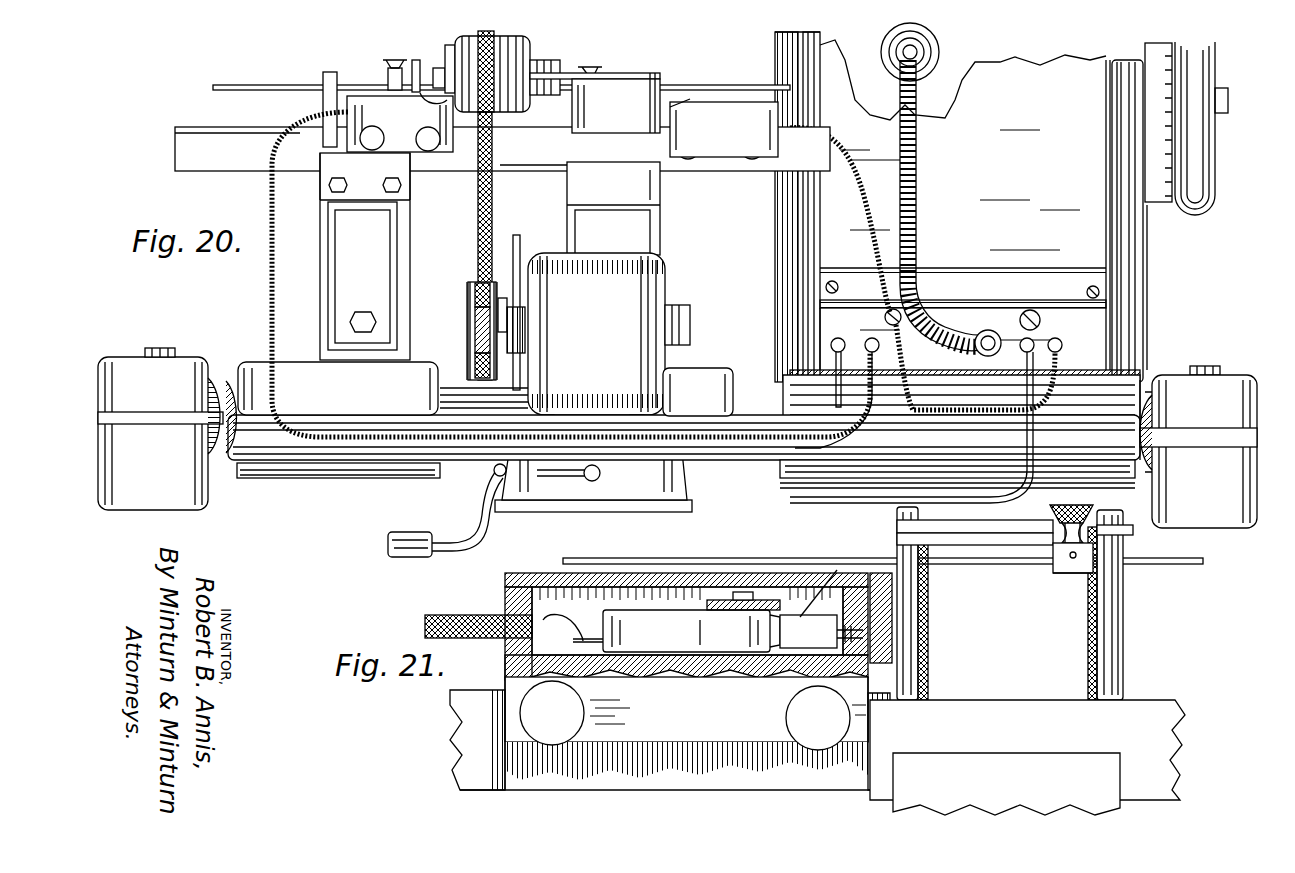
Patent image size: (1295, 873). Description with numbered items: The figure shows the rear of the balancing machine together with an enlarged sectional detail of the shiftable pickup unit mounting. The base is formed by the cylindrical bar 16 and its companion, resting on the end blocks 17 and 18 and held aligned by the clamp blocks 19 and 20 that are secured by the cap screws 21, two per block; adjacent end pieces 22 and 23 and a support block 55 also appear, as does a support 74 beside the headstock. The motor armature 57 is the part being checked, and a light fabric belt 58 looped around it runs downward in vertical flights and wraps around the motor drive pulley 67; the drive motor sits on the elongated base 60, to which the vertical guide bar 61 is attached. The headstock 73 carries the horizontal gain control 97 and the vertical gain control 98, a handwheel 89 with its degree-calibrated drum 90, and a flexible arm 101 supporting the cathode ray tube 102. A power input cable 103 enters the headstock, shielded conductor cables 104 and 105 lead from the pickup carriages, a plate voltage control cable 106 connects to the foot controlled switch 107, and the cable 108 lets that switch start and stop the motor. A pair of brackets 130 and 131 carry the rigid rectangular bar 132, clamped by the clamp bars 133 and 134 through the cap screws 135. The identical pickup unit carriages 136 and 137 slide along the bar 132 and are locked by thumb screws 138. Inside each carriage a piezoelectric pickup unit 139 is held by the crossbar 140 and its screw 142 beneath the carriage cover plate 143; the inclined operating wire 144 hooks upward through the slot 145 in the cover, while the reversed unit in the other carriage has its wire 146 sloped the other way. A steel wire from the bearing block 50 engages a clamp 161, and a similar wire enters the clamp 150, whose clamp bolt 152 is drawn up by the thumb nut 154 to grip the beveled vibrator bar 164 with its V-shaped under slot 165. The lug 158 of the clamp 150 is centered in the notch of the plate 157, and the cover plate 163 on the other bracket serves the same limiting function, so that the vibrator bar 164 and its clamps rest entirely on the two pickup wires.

In FIG. 20, the bar 16 is at (745, 395).
In FIG. 20, the end block 17 is at (198, 504).
In FIG. 20, the end block 18 is at (1218, 513).
In FIG. 20, the clamp block 19 is at (126, 374).
In FIG. 20, the clamp block 20 is at (1230, 391).
In FIG. 20, the cap screw 21 is at (160, 347).
In FIG. 20, the end block 22 is at (252, 377).
In FIG. 20, the lower block 23 is at (288, 466).
In FIG. 20, the bearing block 50 is at (668, 306).
In FIG. 20, the support block 55 is at (702, 377).
In FIG. 20, the motor armature 57 is at (506, 54).
In FIG. 20, the belt 58 is at (492, 196).
In FIG. 20, the base 60 is at (593, 472).
In FIG. 20, the guide bar 61 is at (520, 245).
In FIG. 20, the motor drive pulley 67 is at (465, 331).
In FIG. 20, the headstock 73 is at (1130, 257).
In FIG. 20, the panel support 74 is at (1140, 381).
In FIG. 20, the handwheel 89 is at (1200, 208).
In FIG. 20, the drum 90 is at (1165, 200).
In FIG. 20, the horizontal gain control 97 is at (897, 326).
In FIG. 20, the vertical gain control 98 is at (1042, 322).
In FIG. 20, the flexible arm 101 is at (918, 165).
In FIG. 20, the cathode ray tube 102 is at (940, 49).
In FIG. 20, the power input cable 103 is at (836, 405).
In FIG. 20, the shielded conductor cable 104 is at (270, 291).
In FIG. 21, the shielded conductor cable 104 is at (462, 615).
In FIG. 20, the shielded conductor cable 105 is at (873, 267).
In FIG. 20, the cathode ray plate voltage control cable 106 is at (1024, 437).
In FIG. 20, the foot controlled switch 107 is at (388, 547).
In FIG. 20, the cable 108 is at (456, 519).
In FIG. 20, the bracket 130 is at (392, 245).
In FIG. 21, the bracket 130 is at (1090, 627).
In FIG. 20, the bracket 131 is at (638, 242).
In FIG. 20, the bar 132 is at (210, 139).
In FIG. 21, the bar 132 is at (1148, 707).
In FIG. 20, the clamp bar 133 is at (408, 169).
In FIG. 21, the clamp bar 133 is at (1008, 761).
In FIG. 20, the clamp bar 134 is at (650, 189).
In FIG. 20, the cap screw 135 is at (634, 189).
In FIG. 20, the pickup unit carriage 136 is at (450, 149).
In FIG. 21, the pickup unit carriage 136 is at (670, 733).
In FIG. 20, the pickup unit carriage 137 is at (745, 111).
In FIG. 20, the thumb screw 138 is at (412, 137).
In FIG. 21, the pickup unit 139 is at (667, 621).
In FIG. 21, the crossbar 140 is at (712, 601).
In FIG. 21, the screw 142 is at (740, 592).
In FIG. 21, the carriage cover plate 143 is at (550, 578).
In FIG. 20, the pickup unit operating wire 144 is at (422, 90).
In FIG. 21, the pickup unit operating wire 144 is at (772, 597).
In FIG. 21, the slot 145 is at (875, 574).
In FIG. 20, the operating wire 146 is at (690, 102).
In FIG. 20, the clamp 150 is at (388, 81).
In FIG. 21, the clamp 150 is at (1066, 574).
In FIG. 21, the clamp bolt 152 is at (1060, 502).
In FIG. 20, the thumb nut 154 is at (396, 59).
In FIG. 21, the thumb nut 154 is at (1052, 518).
In FIG. 20, the plate 157 is at (322, 71).
In FIG. 21, the plate 157 is at (978, 533).
In FIG. 21, the lug 158 is at (1052, 542).
In FIG. 20, the clamp 161 is at (590, 97).
In FIG. 20, the cover plate 163 is at (636, 76).
In FIG. 20, the vibrator bar 164 is at (258, 94).
In FIG. 21, the vibrator bar 164 is at (615, 565).
In FIG. 21, the slot 165 is at (800, 567).